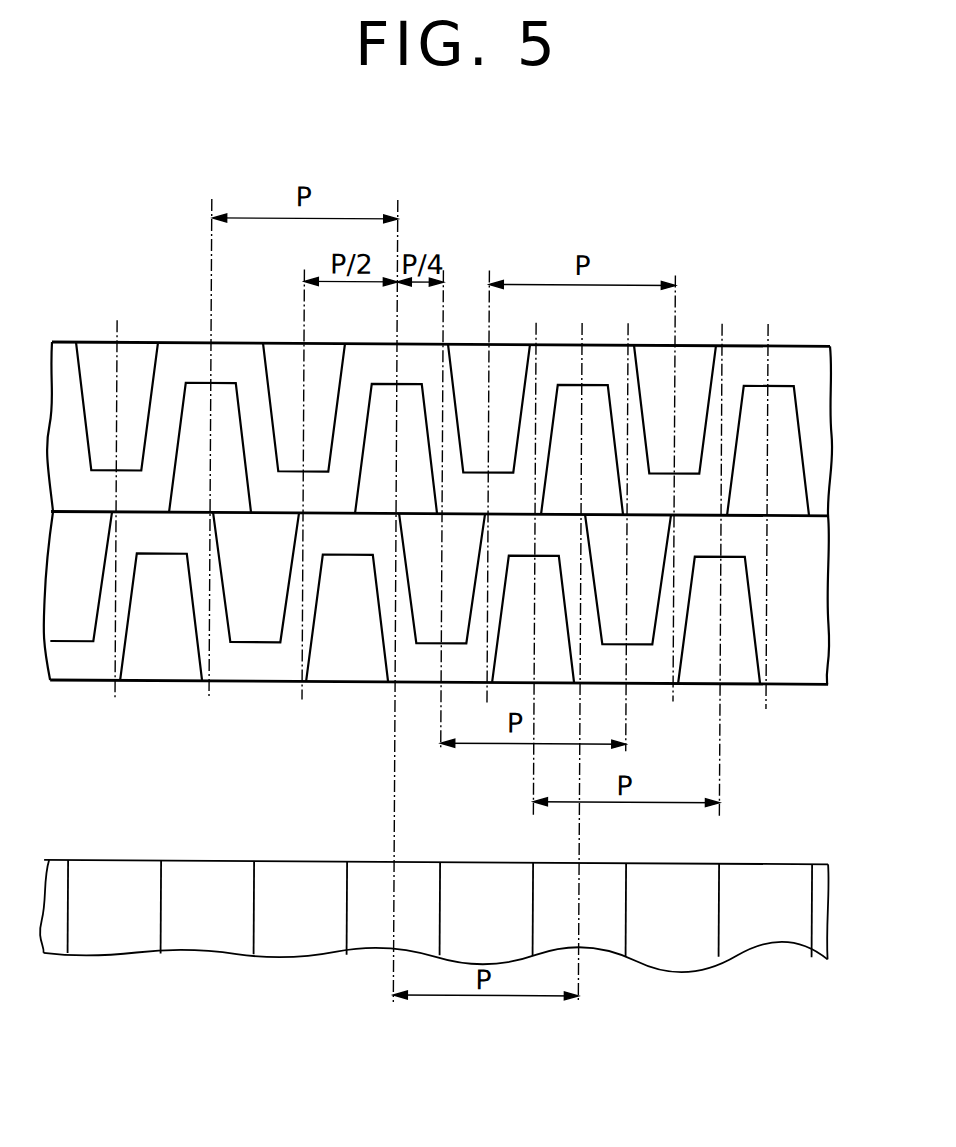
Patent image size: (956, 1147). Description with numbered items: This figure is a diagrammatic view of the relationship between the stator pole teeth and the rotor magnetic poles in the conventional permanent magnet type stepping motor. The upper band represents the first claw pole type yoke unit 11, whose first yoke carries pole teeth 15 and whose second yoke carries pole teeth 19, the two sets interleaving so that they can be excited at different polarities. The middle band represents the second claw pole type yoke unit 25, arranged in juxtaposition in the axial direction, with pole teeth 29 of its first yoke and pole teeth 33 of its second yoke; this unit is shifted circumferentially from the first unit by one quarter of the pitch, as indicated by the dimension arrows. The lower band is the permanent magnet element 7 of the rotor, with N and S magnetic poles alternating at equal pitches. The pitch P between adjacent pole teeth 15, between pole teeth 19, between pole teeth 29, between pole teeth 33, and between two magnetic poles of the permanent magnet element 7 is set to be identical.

The permanent magnet element 7 is at (808, 852).
The first claw pole type yoke unit 11 is at (466, 399).
The pole teeth 15 is at (137, 357).
The pole teeth 19 is at (220, 393).
The second claw pole type yoke unit 25 is at (462, 628).
The pole teeth 29 is at (258, 625).
The pole teeth 33 is at (162, 667).